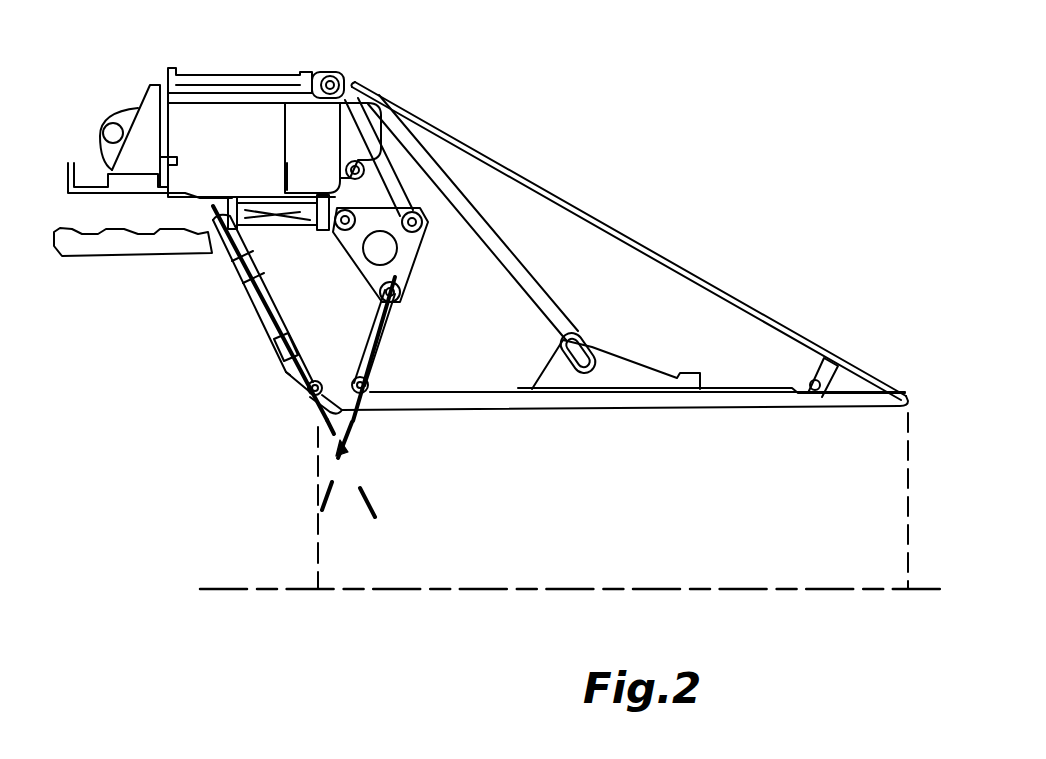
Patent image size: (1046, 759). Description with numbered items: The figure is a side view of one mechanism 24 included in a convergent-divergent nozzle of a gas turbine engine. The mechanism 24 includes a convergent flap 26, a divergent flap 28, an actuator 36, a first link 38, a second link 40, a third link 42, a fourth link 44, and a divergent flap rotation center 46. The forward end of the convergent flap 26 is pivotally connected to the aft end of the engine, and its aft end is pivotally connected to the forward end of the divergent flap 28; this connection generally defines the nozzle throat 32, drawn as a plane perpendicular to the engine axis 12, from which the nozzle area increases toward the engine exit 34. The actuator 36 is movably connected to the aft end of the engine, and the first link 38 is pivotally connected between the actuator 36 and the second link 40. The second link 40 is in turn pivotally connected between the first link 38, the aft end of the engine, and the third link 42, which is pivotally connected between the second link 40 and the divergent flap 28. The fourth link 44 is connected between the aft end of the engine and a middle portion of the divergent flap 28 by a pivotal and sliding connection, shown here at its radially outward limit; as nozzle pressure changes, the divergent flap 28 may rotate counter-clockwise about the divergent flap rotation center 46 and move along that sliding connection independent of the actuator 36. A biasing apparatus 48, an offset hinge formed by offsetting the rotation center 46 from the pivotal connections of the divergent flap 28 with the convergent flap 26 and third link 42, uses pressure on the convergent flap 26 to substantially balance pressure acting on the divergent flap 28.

The engine axis 12 is at (585, 589).
The mechanism 24 is at (593, 110).
The convergent flap 26 is at (255, 315).
The divergent flap 28 is at (568, 410).
The nozzle throat 32 is at (316, 470).
The engine exit 34 is at (906, 492).
The actuator 36 is at (285, 150).
The first link 38 is at (385, 193).
The second link 40 is at (420, 262).
The third link 42 is at (398, 318).
The fourth link 44 is at (508, 270).
The divergent flap rotation center 46 is at (350, 445).
The biasing apparatus 48 is at (302, 392).